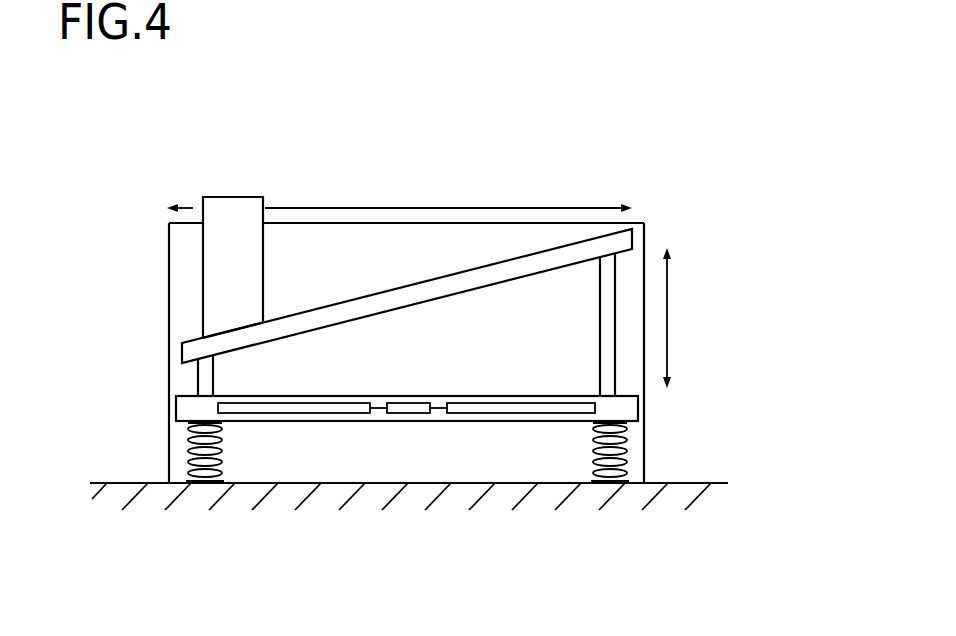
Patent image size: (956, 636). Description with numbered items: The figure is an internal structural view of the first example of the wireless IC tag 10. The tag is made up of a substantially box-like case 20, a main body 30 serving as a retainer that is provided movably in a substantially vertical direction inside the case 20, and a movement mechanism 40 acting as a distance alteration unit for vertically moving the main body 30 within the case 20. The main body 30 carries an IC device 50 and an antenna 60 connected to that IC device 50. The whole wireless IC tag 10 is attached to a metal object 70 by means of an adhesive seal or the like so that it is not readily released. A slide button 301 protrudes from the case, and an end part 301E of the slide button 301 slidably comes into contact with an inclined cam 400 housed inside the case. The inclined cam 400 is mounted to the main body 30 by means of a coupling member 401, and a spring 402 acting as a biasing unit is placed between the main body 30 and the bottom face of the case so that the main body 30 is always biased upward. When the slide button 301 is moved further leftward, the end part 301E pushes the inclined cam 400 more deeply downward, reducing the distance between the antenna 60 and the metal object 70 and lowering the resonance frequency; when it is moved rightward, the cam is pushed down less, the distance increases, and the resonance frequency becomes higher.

The wireless IC tag 10 is at (524, 104).
The case 20 is at (168, 287).
The main body 30 is at (628, 407).
The movement mechanism 40 is at (612, 322).
The IC device 50 is at (412, 408).
The antenna 60 is at (302, 408).
The metal object 70 is at (427, 607).
The slide button 301 is at (233, 197).
The end part 301E is at (213, 315).
The inclined cam 400 is at (623, 233).
The coupling member 401 is at (200, 380).
The spring 402 is at (192, 450).